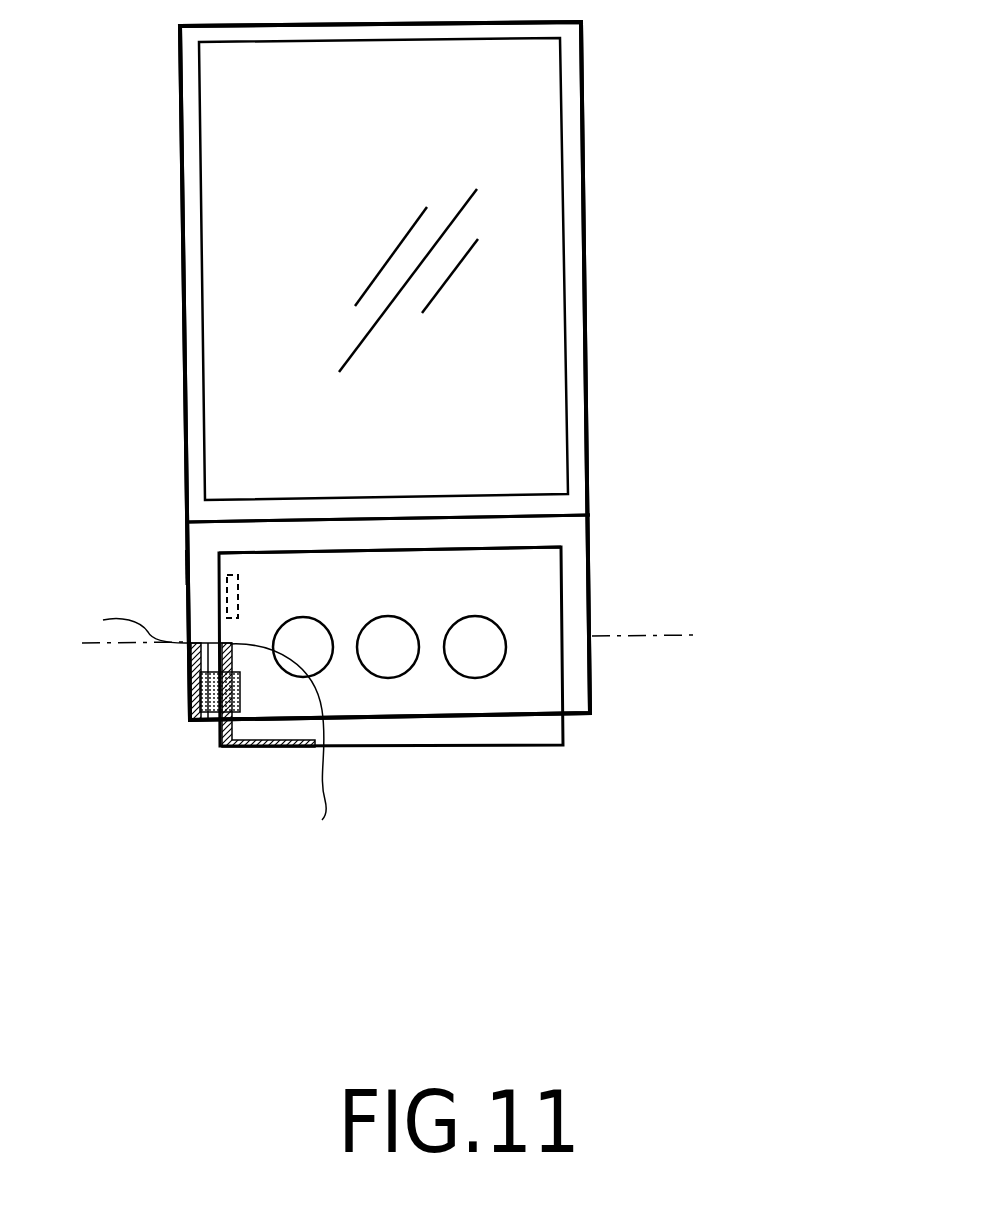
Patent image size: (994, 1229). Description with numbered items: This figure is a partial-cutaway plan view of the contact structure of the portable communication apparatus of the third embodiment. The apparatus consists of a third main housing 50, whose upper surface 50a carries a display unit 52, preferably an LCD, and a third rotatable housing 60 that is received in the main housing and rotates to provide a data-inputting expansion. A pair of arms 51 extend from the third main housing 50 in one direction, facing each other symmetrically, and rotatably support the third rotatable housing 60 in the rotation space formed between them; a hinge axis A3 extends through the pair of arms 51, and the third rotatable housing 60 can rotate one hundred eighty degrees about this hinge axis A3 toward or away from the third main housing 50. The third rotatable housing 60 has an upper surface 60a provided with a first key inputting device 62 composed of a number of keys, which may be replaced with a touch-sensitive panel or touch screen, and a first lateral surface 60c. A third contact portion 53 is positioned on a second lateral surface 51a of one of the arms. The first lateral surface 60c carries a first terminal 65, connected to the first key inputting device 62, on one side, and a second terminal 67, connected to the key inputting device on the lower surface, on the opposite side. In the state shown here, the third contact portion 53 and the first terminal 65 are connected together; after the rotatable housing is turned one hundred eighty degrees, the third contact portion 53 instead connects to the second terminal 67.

The third main housing 50 is at (592, 170).
The upper surface 50a is at (567, 132).
The pair of arms 51 is at (568, 589).
The second lateral surface 51a is at (187, 568).
The display unit 52 is at (528, 87).
The third contact portion 53 is at (190, 678).
The third rotatable housing 60 is at (474, 760).
The upper surface 60a is at (537, 622).
The first lateral surface 60c is at (235, 656).
The first key inputting device 62 is at (477, 643).
The first terminal 65 is at (240, 692).
The second terminal 67 is at (233, 575).
The hinge axis A3 is at (645, 635).